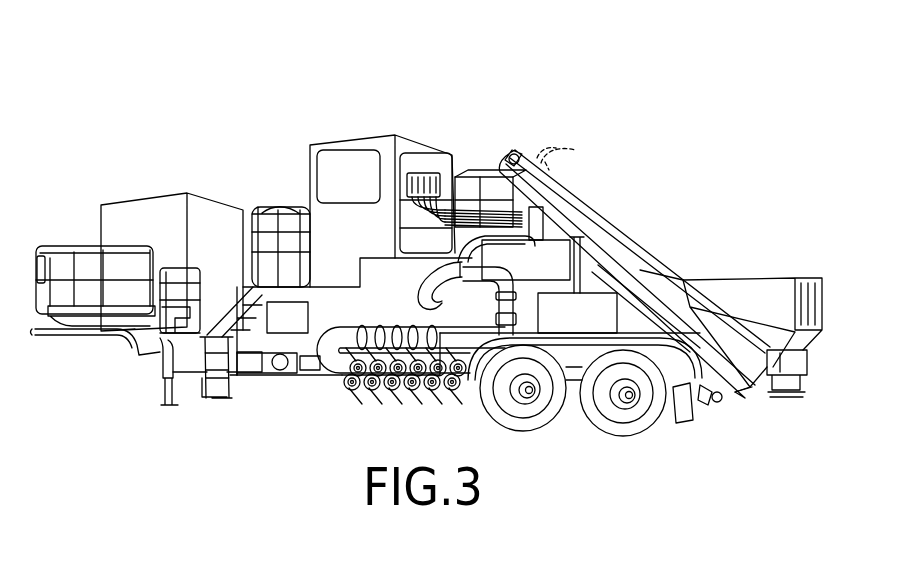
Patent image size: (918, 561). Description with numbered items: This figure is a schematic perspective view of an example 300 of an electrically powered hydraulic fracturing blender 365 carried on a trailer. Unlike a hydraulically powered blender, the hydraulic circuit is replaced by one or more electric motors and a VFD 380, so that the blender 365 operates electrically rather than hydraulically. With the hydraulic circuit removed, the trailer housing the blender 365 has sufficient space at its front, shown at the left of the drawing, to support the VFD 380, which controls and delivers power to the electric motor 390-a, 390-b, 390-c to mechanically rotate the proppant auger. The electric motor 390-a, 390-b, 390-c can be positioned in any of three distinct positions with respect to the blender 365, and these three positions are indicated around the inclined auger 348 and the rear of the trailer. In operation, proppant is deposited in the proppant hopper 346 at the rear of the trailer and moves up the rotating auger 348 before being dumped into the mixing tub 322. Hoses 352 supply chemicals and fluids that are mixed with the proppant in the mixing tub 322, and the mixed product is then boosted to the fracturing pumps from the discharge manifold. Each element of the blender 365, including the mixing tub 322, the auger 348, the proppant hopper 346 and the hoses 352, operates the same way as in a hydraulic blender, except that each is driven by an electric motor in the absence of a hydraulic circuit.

The example of an electrically powered hydraulic fracturing blender 300 is at (707, 89).
The mixing tub 322 is at (557, 267).
The proppant hopper 346 is at (808, 281).
The auger 348 is at (622, 231).
The hoses 352 is at (472, 178).
The blender 365 is at (262, 427).
The VFD 380 is at (120, 224).
The electric motor 390-a is at (562, 166).
The electric motor 390-b is at (718, 418).
The electric motor 390-c is at (760, 398).